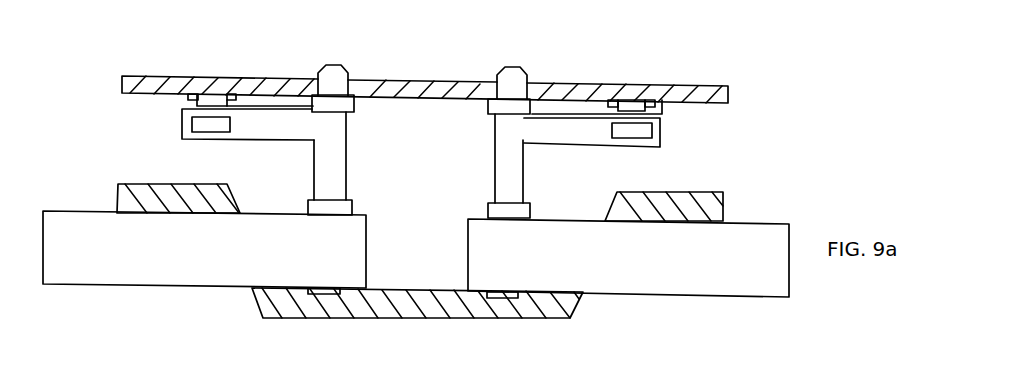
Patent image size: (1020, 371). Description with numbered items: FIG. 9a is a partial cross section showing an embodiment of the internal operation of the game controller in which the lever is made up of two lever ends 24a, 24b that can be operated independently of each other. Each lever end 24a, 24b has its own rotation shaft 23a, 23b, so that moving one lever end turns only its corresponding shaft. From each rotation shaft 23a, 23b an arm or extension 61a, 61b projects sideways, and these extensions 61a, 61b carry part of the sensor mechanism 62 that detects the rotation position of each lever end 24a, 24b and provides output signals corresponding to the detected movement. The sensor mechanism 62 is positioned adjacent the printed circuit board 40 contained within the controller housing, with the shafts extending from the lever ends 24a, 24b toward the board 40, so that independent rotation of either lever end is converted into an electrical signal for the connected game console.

The printed circuit board 40 is at (585, 85).
The rotation shaft 23a is at (330, 160).
The rotation shaft 23b is at (512, 160).
The arm or extension 61a is at (248, 124).
The arm or extension 61b is at (555, 128).
The sensor mechanism 62 is at (662, 112).
The lever end 24a is at (192, 263).
The lever end 24b is at (603, 270).